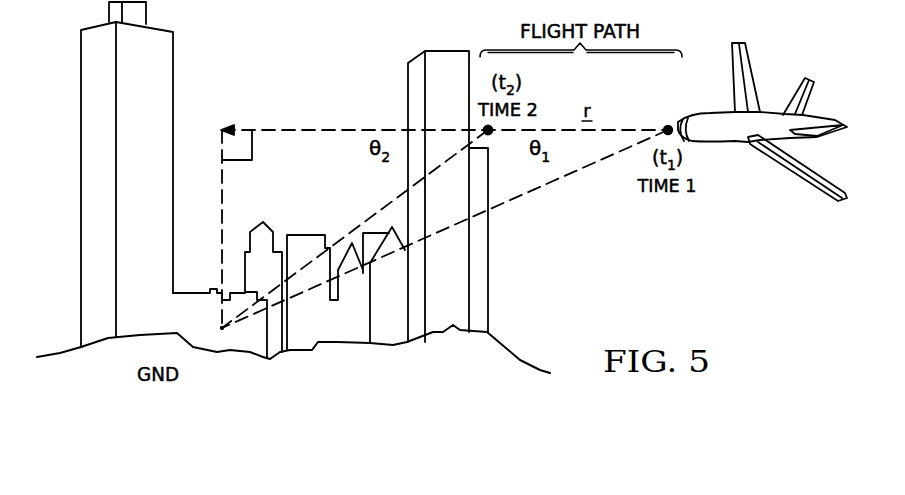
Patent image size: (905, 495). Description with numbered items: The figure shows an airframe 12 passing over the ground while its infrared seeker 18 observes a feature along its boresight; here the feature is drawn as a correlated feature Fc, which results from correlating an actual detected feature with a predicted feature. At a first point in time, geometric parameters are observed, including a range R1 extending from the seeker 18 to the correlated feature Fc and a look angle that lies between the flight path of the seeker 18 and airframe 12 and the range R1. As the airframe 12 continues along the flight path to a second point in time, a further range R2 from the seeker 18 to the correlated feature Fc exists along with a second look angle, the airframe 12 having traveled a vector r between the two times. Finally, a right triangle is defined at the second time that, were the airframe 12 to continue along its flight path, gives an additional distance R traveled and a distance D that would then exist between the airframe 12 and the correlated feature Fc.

The airframe 12 is at (812, 81).
The infrared seeker 18 is at (668, 125).
The additional distance R is at (445, 117).
The distance D is at (211, 229).
The range at time t1 R1 is at (445, 229).
The range at time t2 R2 is at (355, 229).
The correlated feature Fc is at (217, 328).